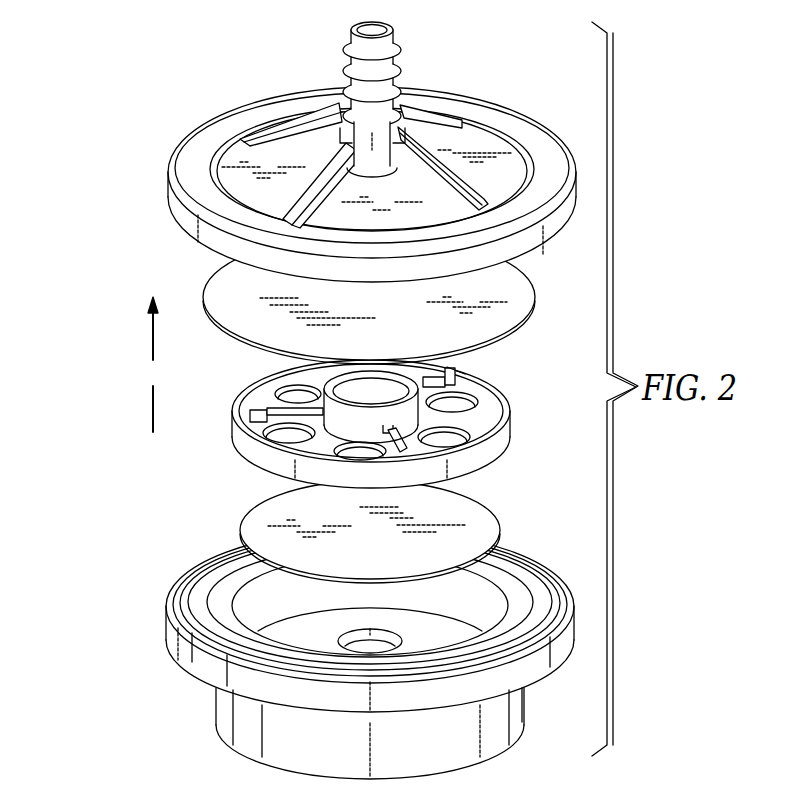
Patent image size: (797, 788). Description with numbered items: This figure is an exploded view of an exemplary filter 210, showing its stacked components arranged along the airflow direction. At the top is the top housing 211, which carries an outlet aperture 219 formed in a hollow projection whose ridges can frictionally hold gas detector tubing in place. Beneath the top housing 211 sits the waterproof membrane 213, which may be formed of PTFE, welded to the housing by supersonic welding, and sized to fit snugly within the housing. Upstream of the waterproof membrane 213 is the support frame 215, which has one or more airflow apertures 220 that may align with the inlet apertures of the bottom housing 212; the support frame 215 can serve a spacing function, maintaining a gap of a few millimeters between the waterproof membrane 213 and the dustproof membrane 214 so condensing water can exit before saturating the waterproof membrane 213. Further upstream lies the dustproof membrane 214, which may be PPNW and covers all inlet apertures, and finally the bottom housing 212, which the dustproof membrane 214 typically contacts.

The filter 210 is at (133, 93).
The top housing 211 is at (236, 157).
The bottom housing 212 is at (224, 714).
The waterproof membrane 213 is at (228, 288).
The dustproof membrane 214 is at (253, 511).
The support frame 215 is at (359, 421).
The outlet aperture 219 is at (378, 34).
The airflow aperture 220 is at (461, 400).